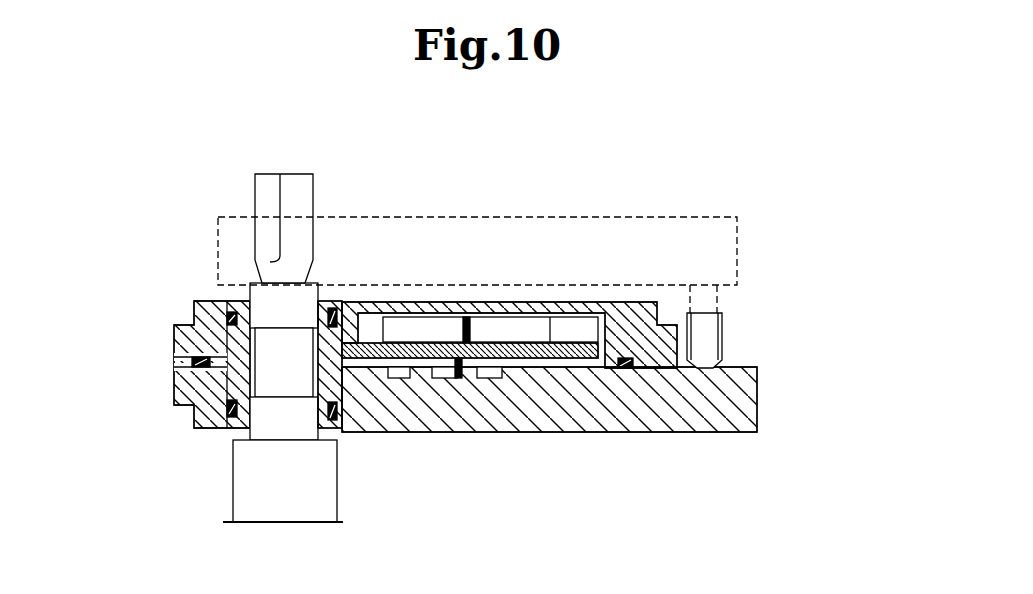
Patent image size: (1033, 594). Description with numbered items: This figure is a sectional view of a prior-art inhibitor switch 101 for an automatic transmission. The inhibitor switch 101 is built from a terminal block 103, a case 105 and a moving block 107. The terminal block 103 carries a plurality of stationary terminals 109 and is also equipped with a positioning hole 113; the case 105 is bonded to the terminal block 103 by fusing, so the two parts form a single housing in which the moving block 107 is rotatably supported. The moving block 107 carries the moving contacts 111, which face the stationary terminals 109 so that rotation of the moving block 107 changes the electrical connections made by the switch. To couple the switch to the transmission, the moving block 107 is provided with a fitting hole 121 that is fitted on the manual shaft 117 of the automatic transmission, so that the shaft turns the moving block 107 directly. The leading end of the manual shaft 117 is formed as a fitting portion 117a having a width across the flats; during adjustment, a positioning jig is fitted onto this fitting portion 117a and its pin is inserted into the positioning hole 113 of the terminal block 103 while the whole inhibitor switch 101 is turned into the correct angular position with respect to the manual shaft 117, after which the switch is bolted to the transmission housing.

The inhibitor switch 101 is at (160, 325).
The terminal block 103 is at (662, 432).
The case 105 is at (572, 300).
The moving block 107 is at (338, 300).
The stationary terminals 109 is at (448, 378).
The moving contacts 111 is at (458, 364).
The positioning hole 113 is at (712, 313).
The manual shaft 117 is at (337, 488).
The fitting portion 117a is at (262, 199).
The fitting hole 121 is at (463, 208).